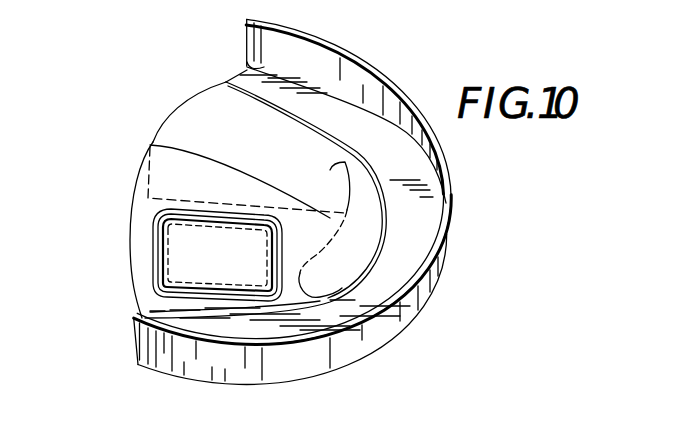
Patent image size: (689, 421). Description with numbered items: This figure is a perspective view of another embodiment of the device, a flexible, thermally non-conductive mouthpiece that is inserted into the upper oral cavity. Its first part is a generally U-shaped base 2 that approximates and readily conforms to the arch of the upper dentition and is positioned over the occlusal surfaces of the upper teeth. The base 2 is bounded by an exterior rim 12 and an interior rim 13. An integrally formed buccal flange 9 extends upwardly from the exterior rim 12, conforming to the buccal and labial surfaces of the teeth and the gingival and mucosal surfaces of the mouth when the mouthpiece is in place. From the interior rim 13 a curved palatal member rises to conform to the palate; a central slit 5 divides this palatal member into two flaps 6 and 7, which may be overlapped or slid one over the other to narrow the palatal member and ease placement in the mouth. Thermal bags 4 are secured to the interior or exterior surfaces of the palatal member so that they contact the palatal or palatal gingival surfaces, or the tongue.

The base 2 is at (400, 169).
The thermal bag 4 is at (167, 272).
The central slit 5 is at (152, 140).
The flap 6 is at (130, 230).
The flap 7 is at (167, 118).
The buccal flange 9 is at (350, 72).
The exterior rim 12 is at (243, 63).
The interior rim 13 is at (222, 84).